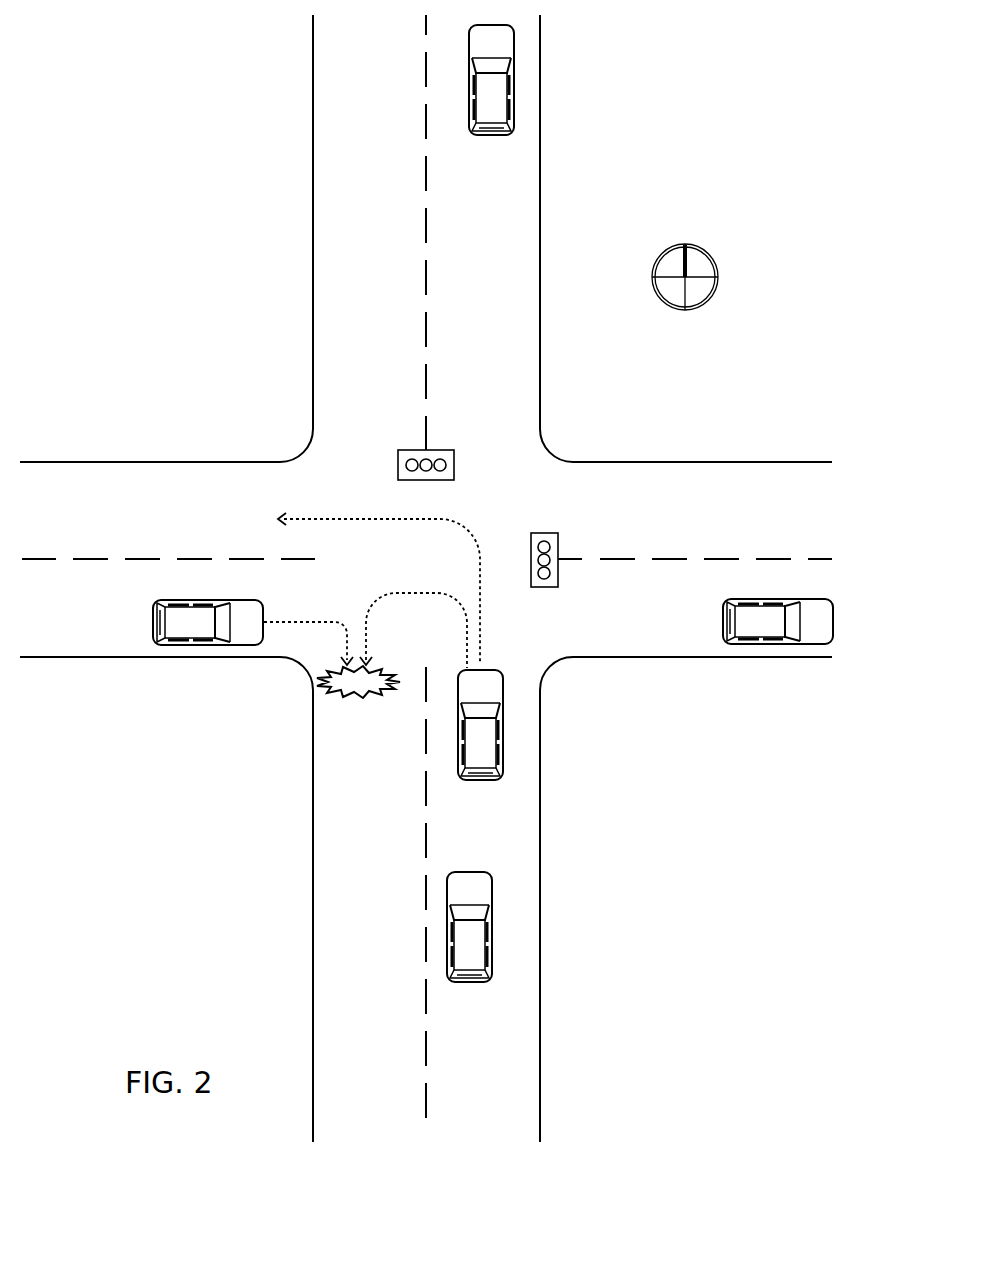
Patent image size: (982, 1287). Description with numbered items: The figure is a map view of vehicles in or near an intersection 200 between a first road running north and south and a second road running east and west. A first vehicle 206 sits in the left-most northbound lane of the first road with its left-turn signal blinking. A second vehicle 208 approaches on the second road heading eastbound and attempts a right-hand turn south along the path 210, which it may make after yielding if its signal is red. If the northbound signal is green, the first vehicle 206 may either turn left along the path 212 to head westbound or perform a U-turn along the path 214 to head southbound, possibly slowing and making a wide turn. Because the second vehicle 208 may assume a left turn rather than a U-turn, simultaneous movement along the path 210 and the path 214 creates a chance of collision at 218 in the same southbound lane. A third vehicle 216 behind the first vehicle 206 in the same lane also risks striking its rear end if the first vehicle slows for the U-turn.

The intersection 200 is at (155, 148).
The first vehicle 206 is at (503, 695).
The second vehicle 208 is at (243, 642).
The path 210 is at (308, 630).
The path 212 is at (379, 578).
The path 214 is at (413, 617).
The third vehicle 216 is at (493, 905).
The chance of collision 218 is at (325, 692).